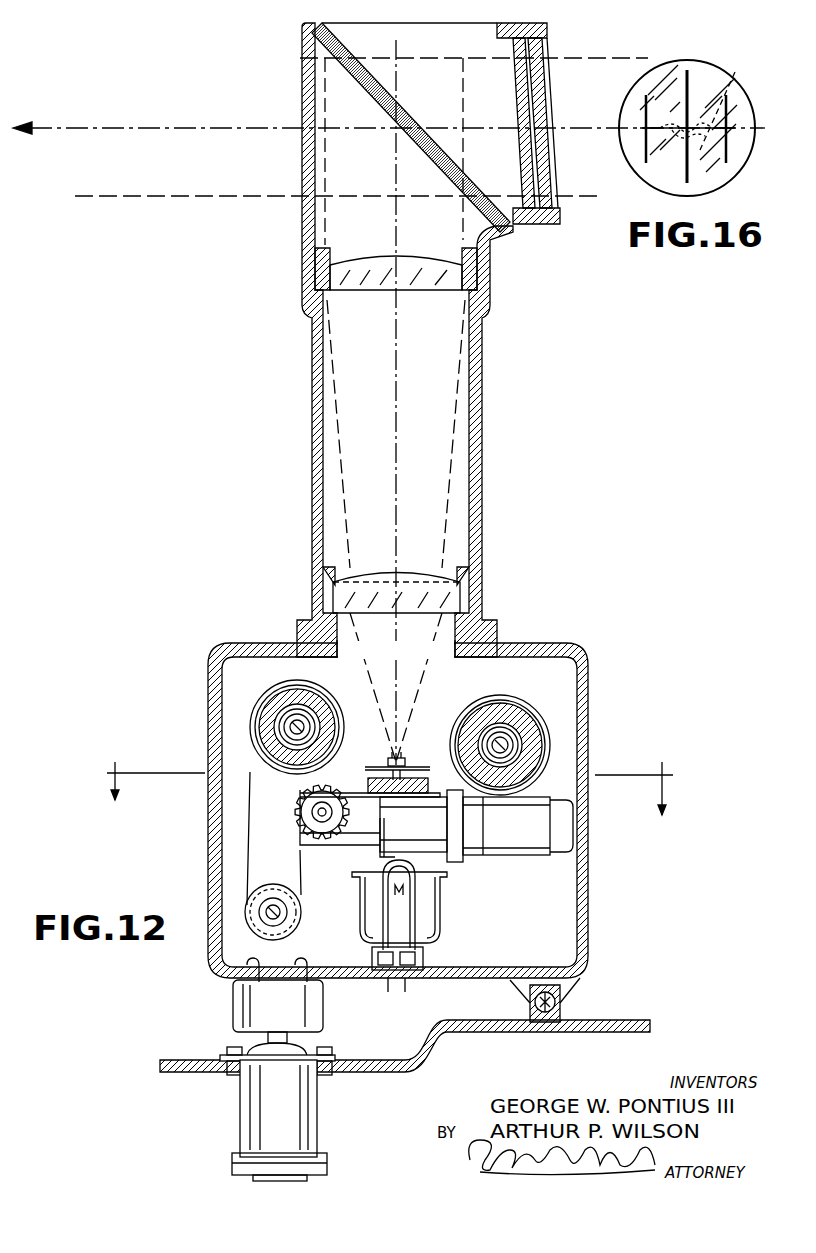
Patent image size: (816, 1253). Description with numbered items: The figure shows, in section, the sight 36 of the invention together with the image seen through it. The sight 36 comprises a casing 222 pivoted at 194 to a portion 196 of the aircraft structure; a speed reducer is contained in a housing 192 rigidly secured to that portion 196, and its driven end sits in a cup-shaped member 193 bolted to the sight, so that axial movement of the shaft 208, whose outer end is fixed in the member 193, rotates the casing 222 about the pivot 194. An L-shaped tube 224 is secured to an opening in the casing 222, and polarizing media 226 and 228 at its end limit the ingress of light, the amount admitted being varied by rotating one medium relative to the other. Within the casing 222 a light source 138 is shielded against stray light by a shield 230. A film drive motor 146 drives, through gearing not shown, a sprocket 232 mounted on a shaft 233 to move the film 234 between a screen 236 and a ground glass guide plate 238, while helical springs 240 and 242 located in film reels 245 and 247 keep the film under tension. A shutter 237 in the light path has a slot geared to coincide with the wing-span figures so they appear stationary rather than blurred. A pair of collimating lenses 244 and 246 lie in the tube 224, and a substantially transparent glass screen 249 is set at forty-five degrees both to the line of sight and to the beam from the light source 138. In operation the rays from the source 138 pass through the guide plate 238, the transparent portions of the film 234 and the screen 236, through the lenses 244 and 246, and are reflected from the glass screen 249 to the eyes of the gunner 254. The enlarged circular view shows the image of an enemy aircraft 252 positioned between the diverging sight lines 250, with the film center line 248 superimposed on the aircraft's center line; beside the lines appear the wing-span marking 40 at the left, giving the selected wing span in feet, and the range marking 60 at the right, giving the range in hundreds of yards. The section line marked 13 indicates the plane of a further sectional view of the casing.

In FIG. 12, the aviator or gunner 254 is at (52, 93).
In FIG. 12, the glass screen 249 is at (380, 92).
In FIG. 12, the polarizing medium 228 is at (513, 46).
In FIG. 12, the polarizing medium 226 is at (545, 46).
In FIG. 12, the collimating lens 246 is at (490, 274).
In FIG. 12, the L-shaped tube 224 is at (312, 404).
In FIG. 12, the sight 36 is at (258, 482).
In FIG. 12, the collimating lens 244 is at (470, 598).
In FIG. 12, the casing 222 is at (590, 703).
In FIG. 12, the section line 13- 13 is at (387, 779).
In FIG. 12, the helical spring 240 is at (292, 722).
In FIG. 12, the film reel 245 is at (300, 710).
In FIG. 12, the helical spring 242 is at (505, 728).
In FIG. 12, the film reel 247 is at (490, 700).
In FIG. 12, the screen 236 is at (372, 784).
In FIG. 12, the shutter 237 is at (428, 764).
In FIG. 12, the ground glass guide plate 238 is at (380, 793).
In FIG. 12, the shaft 233 is at (318, 812).
In FIG. 12, the sprocket 232 is at (318, 848).
In FIG. 12, the film 234 is at (250, 843).
In FIG. 12, the film drive motor 146 is at (500, 852).
In FIG. 12, the shield 230 is at (444, 896).
In FIG. 12, the light source 138 is at (418, 905).
In FIG. 12, the cup-shaped member 193 is at (240, 1003).
In FIG. 12, the shaft 208 is at (270, 1038).
In FIG. 12, the housing 192 is at (245, 1118).
In FIG. 12, the pivot 194 is at (565, 1000).
In FIG. 12, the portion of the aircraft structure 196 is at (475, 1030).
In FIG. 16, the center line 248 is at (690, 75).
In FIG. 16, the diverging lines 250 is at (646, 96).
In FIG. 16, the enemy aircraft 252 is at (738, 100).
In FIG. 16, the scale mark 40 is at (642, 129).
In FIG. 16, the scale mark 60 is at (739, 129).